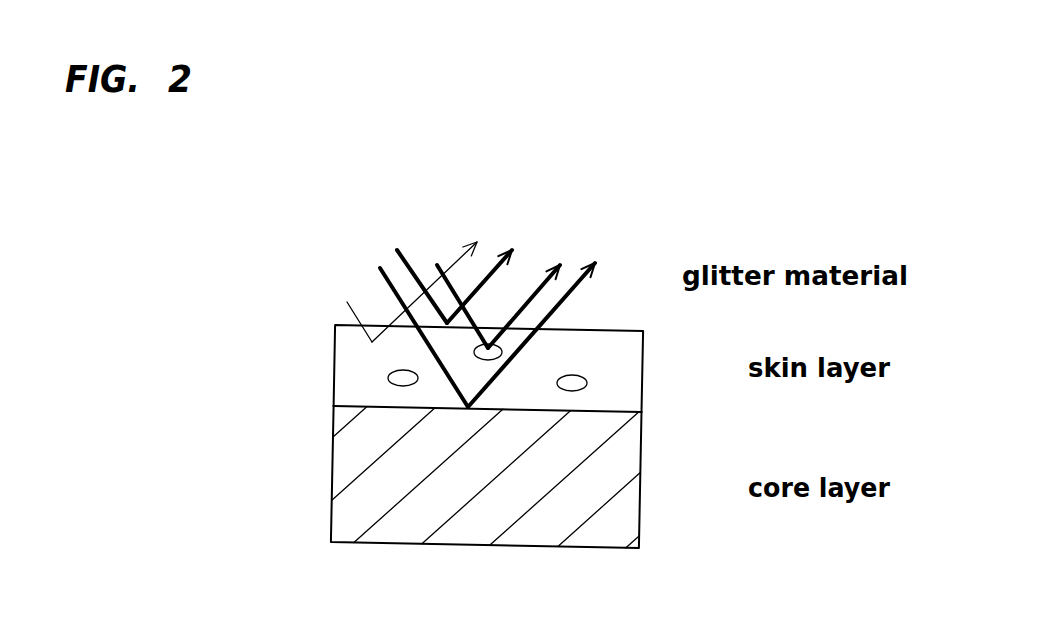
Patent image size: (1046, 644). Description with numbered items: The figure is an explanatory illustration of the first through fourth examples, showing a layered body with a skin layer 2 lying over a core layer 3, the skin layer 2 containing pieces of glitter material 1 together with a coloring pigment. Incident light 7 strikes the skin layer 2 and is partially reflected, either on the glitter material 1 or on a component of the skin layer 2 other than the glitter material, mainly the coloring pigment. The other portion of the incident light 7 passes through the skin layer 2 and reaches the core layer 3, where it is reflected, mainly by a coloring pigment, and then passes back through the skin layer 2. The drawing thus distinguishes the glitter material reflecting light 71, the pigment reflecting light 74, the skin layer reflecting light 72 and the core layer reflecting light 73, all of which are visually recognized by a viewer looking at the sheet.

The glitter material 1 is at (410, 375).
The skin layer 2 is at (617, 377).
The core layer 3 is at (594, 497).
The incident light 7 is at (391, 272).
The glitter material reflecting light 71 is at (536, 289).
The skin layer reflecting light 72 is at (493, 268).
The core layer reflecting light 73 is at (572, 287).
The pigment reflecting light 74 is at (386, 292).